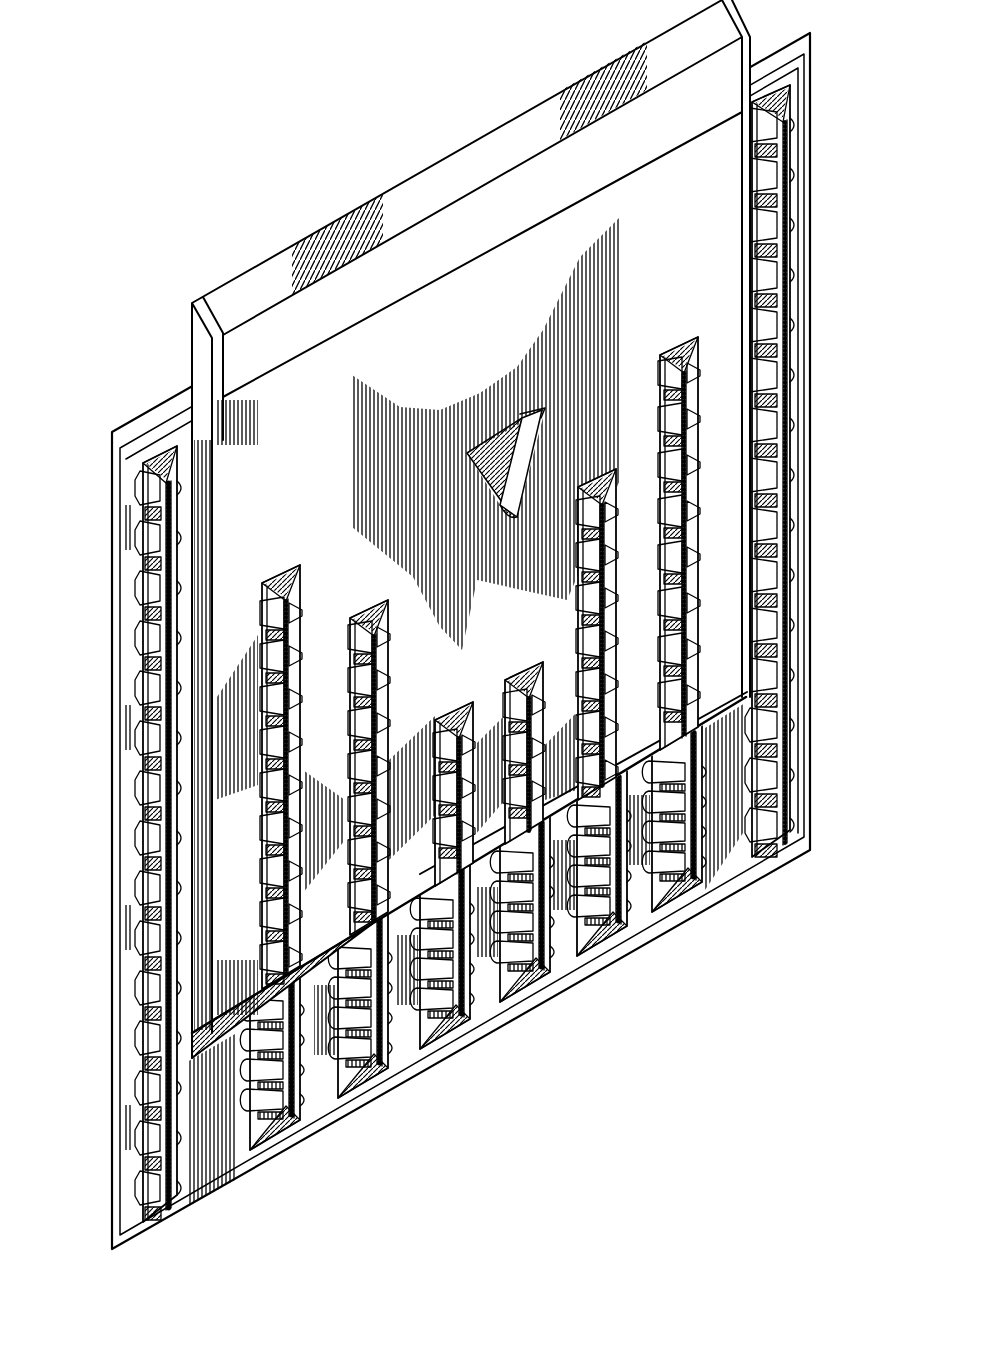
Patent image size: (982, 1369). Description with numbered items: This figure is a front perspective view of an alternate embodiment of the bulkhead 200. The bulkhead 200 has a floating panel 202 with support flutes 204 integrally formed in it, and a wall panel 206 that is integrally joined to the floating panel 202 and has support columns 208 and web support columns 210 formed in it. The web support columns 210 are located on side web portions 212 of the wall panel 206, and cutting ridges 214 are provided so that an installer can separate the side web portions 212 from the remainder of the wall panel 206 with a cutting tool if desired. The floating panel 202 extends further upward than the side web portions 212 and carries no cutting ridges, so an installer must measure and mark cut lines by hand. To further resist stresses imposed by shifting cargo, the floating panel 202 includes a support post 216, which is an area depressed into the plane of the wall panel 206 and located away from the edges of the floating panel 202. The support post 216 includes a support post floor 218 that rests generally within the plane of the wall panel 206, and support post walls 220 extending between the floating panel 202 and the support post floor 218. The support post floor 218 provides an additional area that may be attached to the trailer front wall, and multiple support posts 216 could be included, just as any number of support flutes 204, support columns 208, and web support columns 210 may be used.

The bulkhead 200 is at (150, 240).
The floating panel 202 is at (710, 173).
The support flutes 204 is at (299, 566).
The wall panel 206 is at (225, 1145).
The support columns 208 is at (406, 1088).
The web support columns 210 is at (818, 471).
The side web portions 212 is at (814, 523).
The cutting ridges 214 is at (187, 410).
The support post 216 is at (539, 426).
The support post floor 218 is at (527, 407).
The support post walls 220 is at (540, 443).